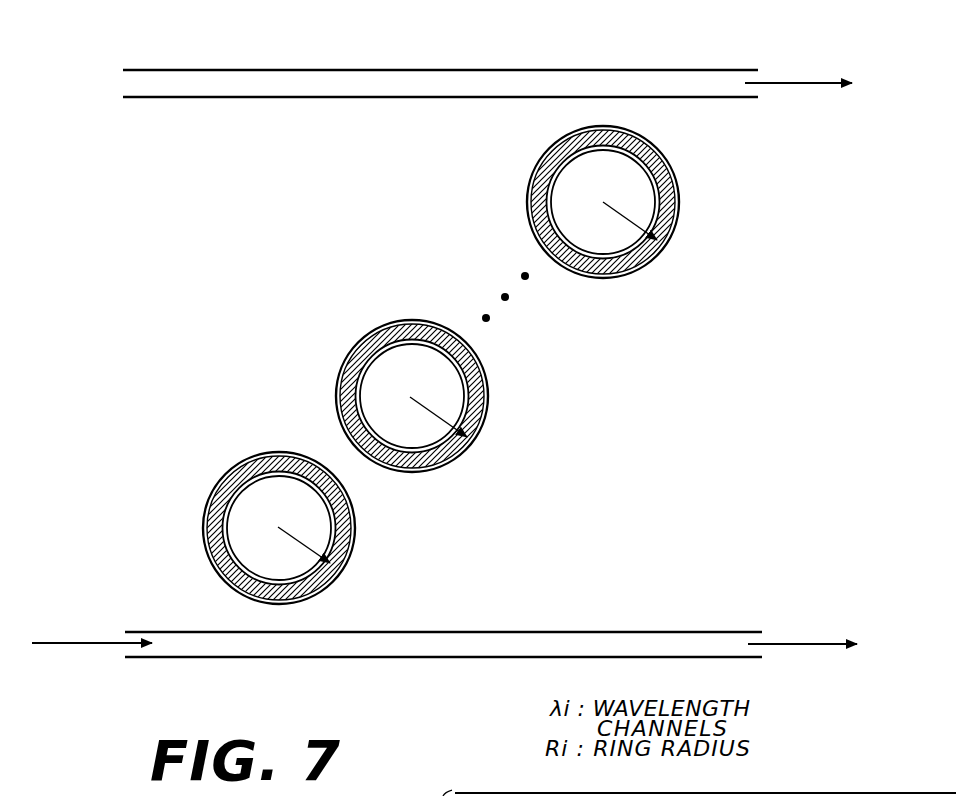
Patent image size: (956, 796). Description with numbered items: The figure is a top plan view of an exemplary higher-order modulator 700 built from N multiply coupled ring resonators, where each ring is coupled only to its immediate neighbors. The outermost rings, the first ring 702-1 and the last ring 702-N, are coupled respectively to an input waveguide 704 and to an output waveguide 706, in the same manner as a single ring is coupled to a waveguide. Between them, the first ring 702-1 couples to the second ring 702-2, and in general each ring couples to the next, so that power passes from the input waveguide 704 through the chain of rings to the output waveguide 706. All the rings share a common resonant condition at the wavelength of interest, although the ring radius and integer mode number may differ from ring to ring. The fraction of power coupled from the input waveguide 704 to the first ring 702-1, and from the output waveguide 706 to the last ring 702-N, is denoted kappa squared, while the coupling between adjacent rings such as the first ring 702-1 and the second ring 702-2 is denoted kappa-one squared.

The higher-order modulator 700 is at (648, 400).
The ring-1 702-1 is at (215, 508).
The ring-2 702-2 is at (348, 378).
The ring-N 702-N is at (533, 178).
The input waveguide 704 is at (592, 657).
The output waveguide 706 is at (718, 57).